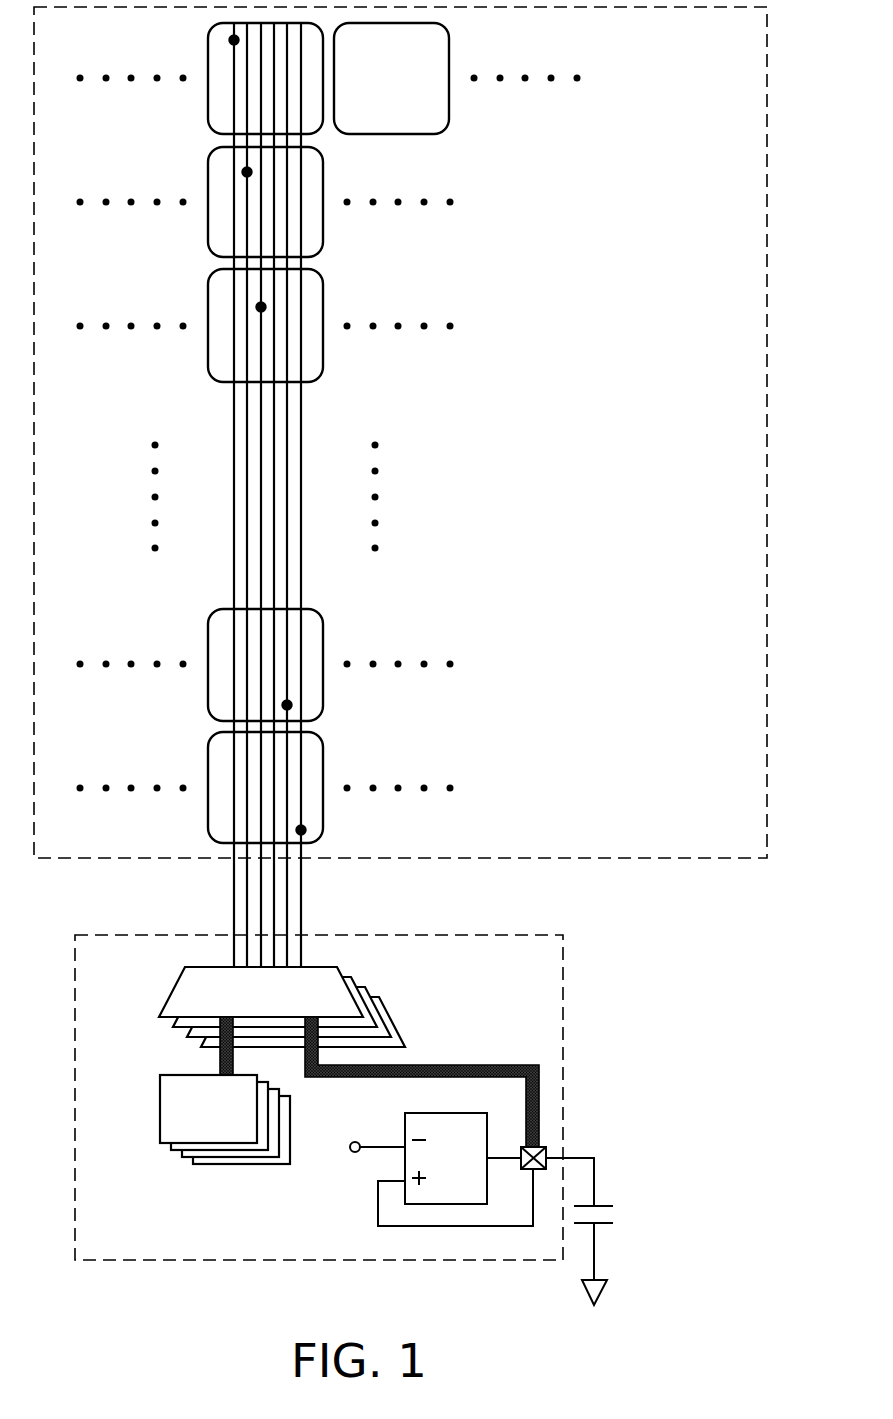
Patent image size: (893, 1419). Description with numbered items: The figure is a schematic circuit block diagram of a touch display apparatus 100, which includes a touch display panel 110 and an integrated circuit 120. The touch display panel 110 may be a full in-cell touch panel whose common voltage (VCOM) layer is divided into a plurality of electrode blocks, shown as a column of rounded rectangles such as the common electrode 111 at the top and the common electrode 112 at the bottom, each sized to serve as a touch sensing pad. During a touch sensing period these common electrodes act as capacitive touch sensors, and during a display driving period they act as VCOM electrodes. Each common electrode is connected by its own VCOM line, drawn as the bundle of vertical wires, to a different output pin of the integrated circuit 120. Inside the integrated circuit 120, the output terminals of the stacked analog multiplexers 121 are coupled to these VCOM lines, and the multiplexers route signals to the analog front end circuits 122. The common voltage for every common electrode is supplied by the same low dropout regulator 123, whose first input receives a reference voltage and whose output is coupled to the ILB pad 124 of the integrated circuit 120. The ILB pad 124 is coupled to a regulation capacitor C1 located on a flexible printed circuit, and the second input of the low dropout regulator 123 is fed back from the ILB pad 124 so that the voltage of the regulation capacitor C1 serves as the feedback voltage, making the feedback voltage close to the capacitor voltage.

The touch display apparatus 100 is at (400, 672).
The touch display panel 110 is at (400, 487).
The common electrode 111 is at (208, 47).
The common electrode 112 is at (208, 757).
The integrated circuit 120 is at (563, 1032).
The analog multiplexer 121 is at (182, 993).
The analog front end circuit 122 is at (160, 1108).
The low dropout regulator 123 is at (447, 1113).
The ILB pad 124 is at (546, 1150).
The regulation capacitor C1 is at (620, 1213).